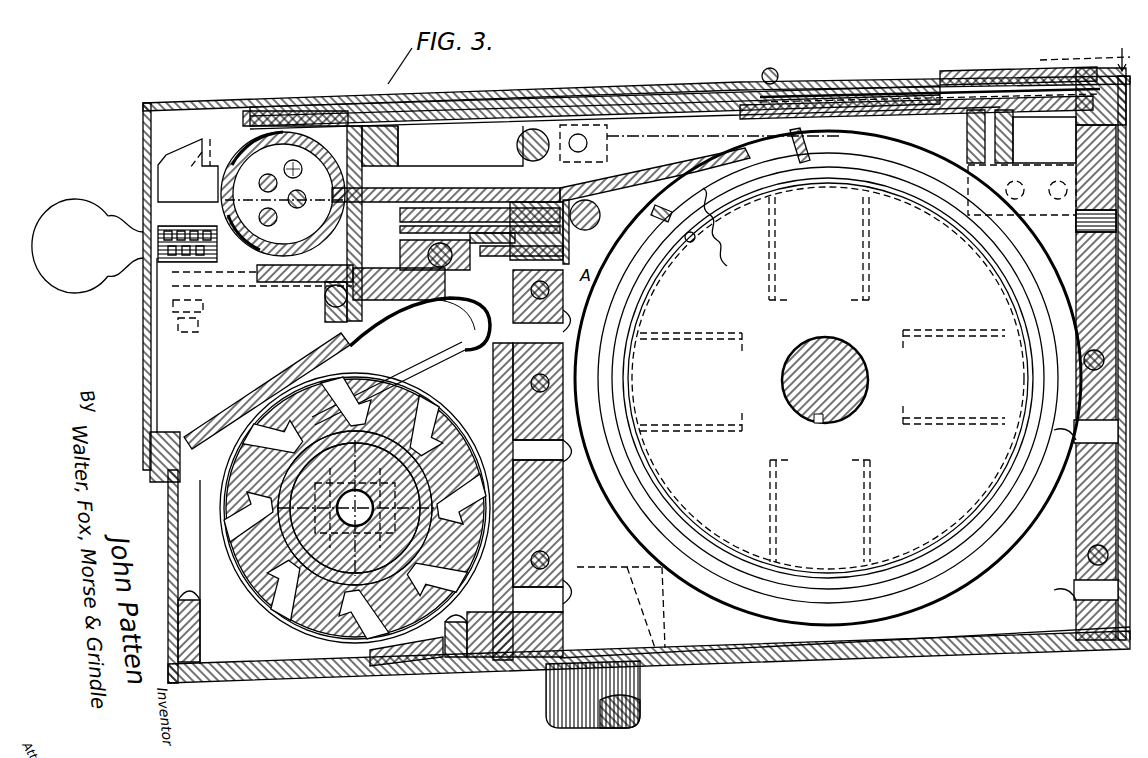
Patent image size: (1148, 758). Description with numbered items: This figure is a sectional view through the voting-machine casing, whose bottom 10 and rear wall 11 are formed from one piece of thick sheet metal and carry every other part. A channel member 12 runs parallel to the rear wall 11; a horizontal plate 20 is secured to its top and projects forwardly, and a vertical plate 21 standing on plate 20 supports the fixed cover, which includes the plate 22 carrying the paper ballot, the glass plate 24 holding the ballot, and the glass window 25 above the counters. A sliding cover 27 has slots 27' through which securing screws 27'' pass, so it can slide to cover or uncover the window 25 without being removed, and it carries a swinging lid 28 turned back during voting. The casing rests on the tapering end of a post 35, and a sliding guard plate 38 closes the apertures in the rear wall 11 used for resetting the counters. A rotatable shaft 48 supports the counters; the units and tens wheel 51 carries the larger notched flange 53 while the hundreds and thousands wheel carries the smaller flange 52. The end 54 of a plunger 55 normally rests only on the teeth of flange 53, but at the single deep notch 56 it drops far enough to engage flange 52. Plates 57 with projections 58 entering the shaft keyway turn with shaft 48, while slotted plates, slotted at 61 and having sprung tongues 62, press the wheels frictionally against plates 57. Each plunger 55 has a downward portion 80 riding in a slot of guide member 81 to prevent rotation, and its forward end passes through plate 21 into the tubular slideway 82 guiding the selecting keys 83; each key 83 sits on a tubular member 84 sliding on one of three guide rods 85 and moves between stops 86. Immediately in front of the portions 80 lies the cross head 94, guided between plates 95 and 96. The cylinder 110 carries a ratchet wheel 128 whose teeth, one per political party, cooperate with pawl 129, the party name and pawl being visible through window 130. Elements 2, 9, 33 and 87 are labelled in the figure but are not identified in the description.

The contact block 2 is at (156, 203).
The casing wall 9 is at (166, 482).
The bottom 10 is at (948, 643).
The rear wall 11 is at (1080, 510).
The channel member 12 is at (494, 382).
The horizontal plate 20 is at (320, 283).
The vertical plate 21 is at (400, 150).
The plate 22 is at (586, 98).
The glass plate 24 is at (486, 104).
The glass window 25 is at (823, 105).
The sliding cover 27 is at (930, 76).
The slots 27' is at (1018, 96).
The securing screws 27'' is at (1085, 77).
The swinging lid 28 is at (210, 103).
The lamp 33 is at (69, 203).
The post 35 is at (642, 689).
The sliding guard plate 38 is at (1076, 242).
The rotatable shaft 48 is at (847, 353).
The units and tens counter 51 is at (651, 274).
The flange 52 is at (986, 194).
The flange 53 is at (892, 177).
The end of plunger 54 is at (808, 152).
The plunger 55 is at (660, 170).
The notch 56 is at (702, 192).
The plates 57 is at (654, 212).
The projections 58 is at (817, 424).
The slots 61 is at (862, 280).
The tongues 62 is at (847, 600).
The downwardly extending portion 80 is at (565, 238).
The guide member 81 is at (590, 226).
The tubular slideway 82 is at (254, 150).
The selecting keys 83 is at (180, 160).
The tubular member 84 is at (273, 217).
The guide rods 85 is at (258, 184).
The stops 86 is at (282, 111).
The spring 87 is at (194, 164).
The cross head 94 is at (522, 200).
The plate 95 is at (455, 226).
The plate 96 is at (425, 208).
The cylinder 110 is at (292, 508).
The ratchet wheel 128 is at (262, 598).
The pawl 129 is at (406, 362).
The window 130 is at (263, 392).